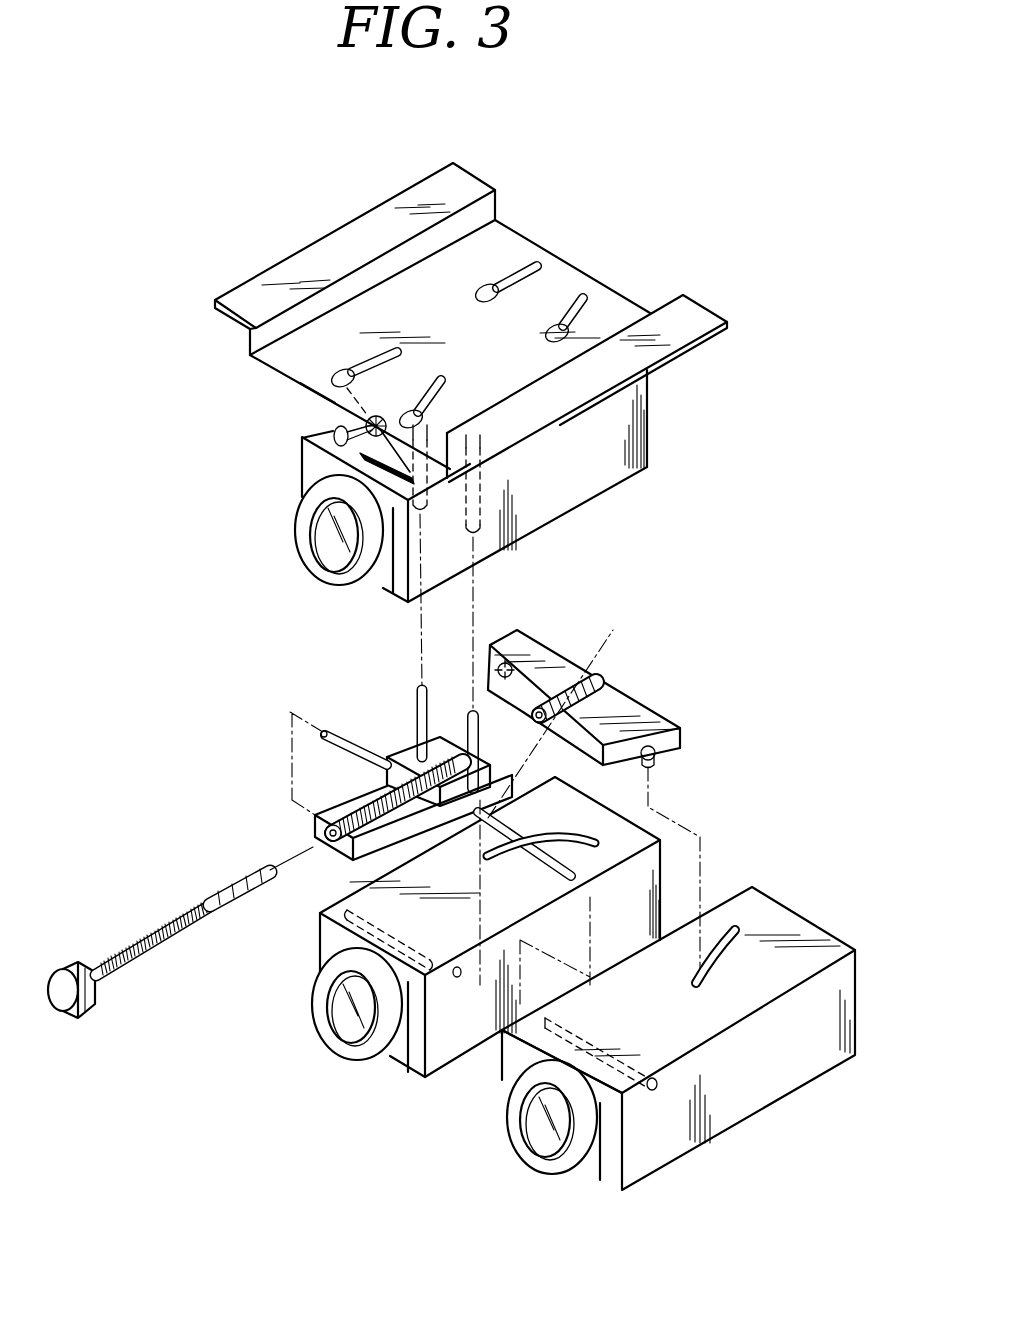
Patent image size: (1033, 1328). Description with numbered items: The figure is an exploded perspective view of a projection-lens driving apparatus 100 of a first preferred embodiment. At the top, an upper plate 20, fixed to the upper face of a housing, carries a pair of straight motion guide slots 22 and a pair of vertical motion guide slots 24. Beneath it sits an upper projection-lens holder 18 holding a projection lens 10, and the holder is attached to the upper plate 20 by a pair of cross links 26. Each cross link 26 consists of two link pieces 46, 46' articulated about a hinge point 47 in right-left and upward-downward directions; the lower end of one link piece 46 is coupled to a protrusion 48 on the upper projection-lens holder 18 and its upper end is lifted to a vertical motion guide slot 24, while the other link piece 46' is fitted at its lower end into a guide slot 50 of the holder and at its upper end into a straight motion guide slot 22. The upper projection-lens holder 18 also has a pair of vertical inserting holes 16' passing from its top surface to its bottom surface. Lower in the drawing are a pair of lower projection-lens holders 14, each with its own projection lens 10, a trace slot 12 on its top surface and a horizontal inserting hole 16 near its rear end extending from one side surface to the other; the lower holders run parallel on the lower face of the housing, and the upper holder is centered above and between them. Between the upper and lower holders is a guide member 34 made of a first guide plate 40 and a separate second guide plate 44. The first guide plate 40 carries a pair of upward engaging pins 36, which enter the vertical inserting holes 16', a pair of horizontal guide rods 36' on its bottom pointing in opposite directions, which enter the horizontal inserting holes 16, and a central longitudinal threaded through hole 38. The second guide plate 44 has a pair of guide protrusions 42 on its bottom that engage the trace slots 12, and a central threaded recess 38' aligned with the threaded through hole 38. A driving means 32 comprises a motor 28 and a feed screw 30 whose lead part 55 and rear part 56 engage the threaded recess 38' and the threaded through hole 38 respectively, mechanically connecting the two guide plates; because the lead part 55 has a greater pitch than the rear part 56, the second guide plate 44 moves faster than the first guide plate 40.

The projection-lens driving apparatus 100 is at (222, 194).
The projection lens 10 is at (325, 537).
The trace slot 12 is at (550, 838).
The lower projection-lens holder 14 is at (640, 822).
The horizontal inserting hole 16 is at (418, 1006).
The vertical inserting hole 16' is at (486, 569).
The upper projection-lens holder 18 is at (618, 432).
The upper plate 20 is at (582, 258).
The straight motion guide slot 22 is at (478, 291).
The vertical motion guide slot 24 is at (553, 338).
The cross link 26 is at (322, 394).
The motor 28 is at (64, 966).
The feed screw 30 is at (137, 937).
The driving means 32 is at (60, 872).
The guide member 34 is at (672, 632).
The engaging pin 36 is at (418, 700).
The guide rod 36' is at (450, 784).
The threaded through hole 38 is at (365, 786).
The threaded recess 38' is at (578, 717).
The first guide plate 40 is at (393, 752).
The guide protrusion 42 is at (527, 662).
The second guide plate 44 is at (638, 702).
The link piece 46 is at (363, 350).
The link piece 46' is at (446, 404).
The hinge point 47 is at (384, 417).
The protrusion 48 is at (335, 437).
The guide slot 50 is at (365, 457).
The lead part 55 is at (280, 887).
The rear part 56 is at (245, 922).